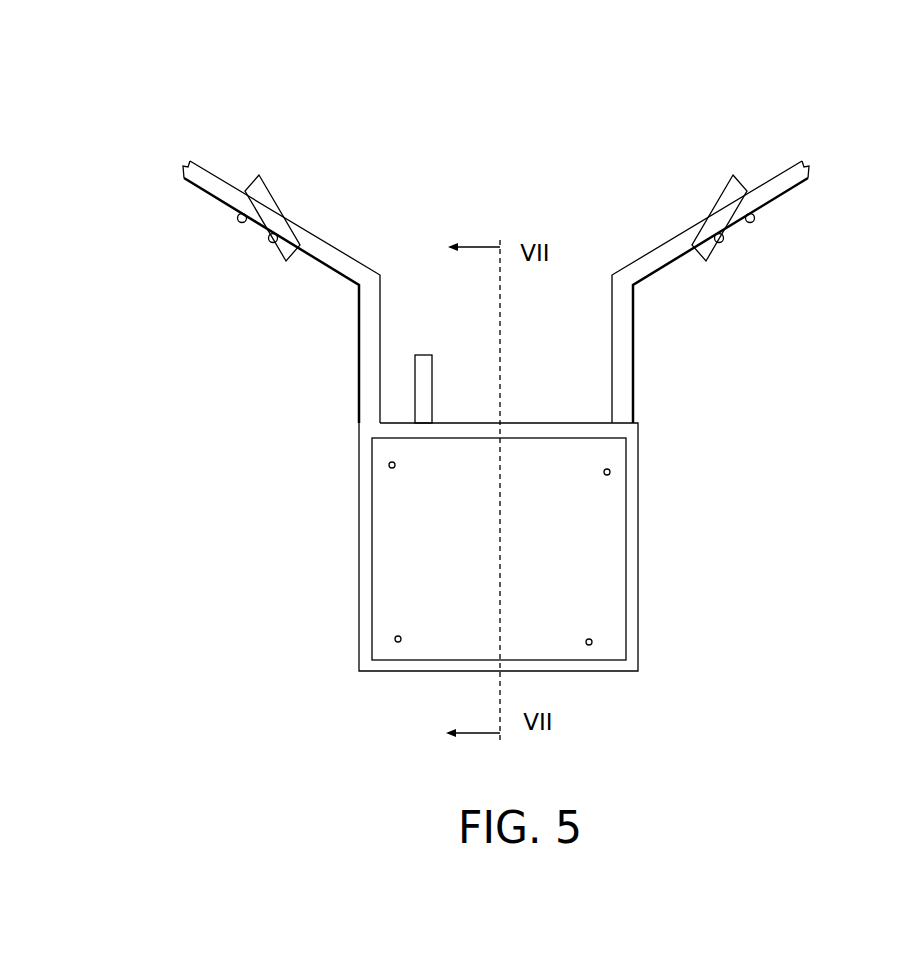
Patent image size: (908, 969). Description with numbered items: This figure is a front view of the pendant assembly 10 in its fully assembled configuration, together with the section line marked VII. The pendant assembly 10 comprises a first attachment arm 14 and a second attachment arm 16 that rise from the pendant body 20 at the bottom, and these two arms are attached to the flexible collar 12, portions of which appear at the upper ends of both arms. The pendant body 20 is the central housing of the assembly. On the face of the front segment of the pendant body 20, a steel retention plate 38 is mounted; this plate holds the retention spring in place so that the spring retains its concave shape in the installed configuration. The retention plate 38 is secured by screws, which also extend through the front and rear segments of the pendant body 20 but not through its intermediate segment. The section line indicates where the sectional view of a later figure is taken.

The pendant assembly 10 is at (602, 175).
The collar 12 is at (202, 195).
The first attachment arm 14 is at (338, 273).
The second attachment arm 16 is at (631, 332).
The pendant body 20 is at (335, 542).
The retention plate 38 is at (588, 562).